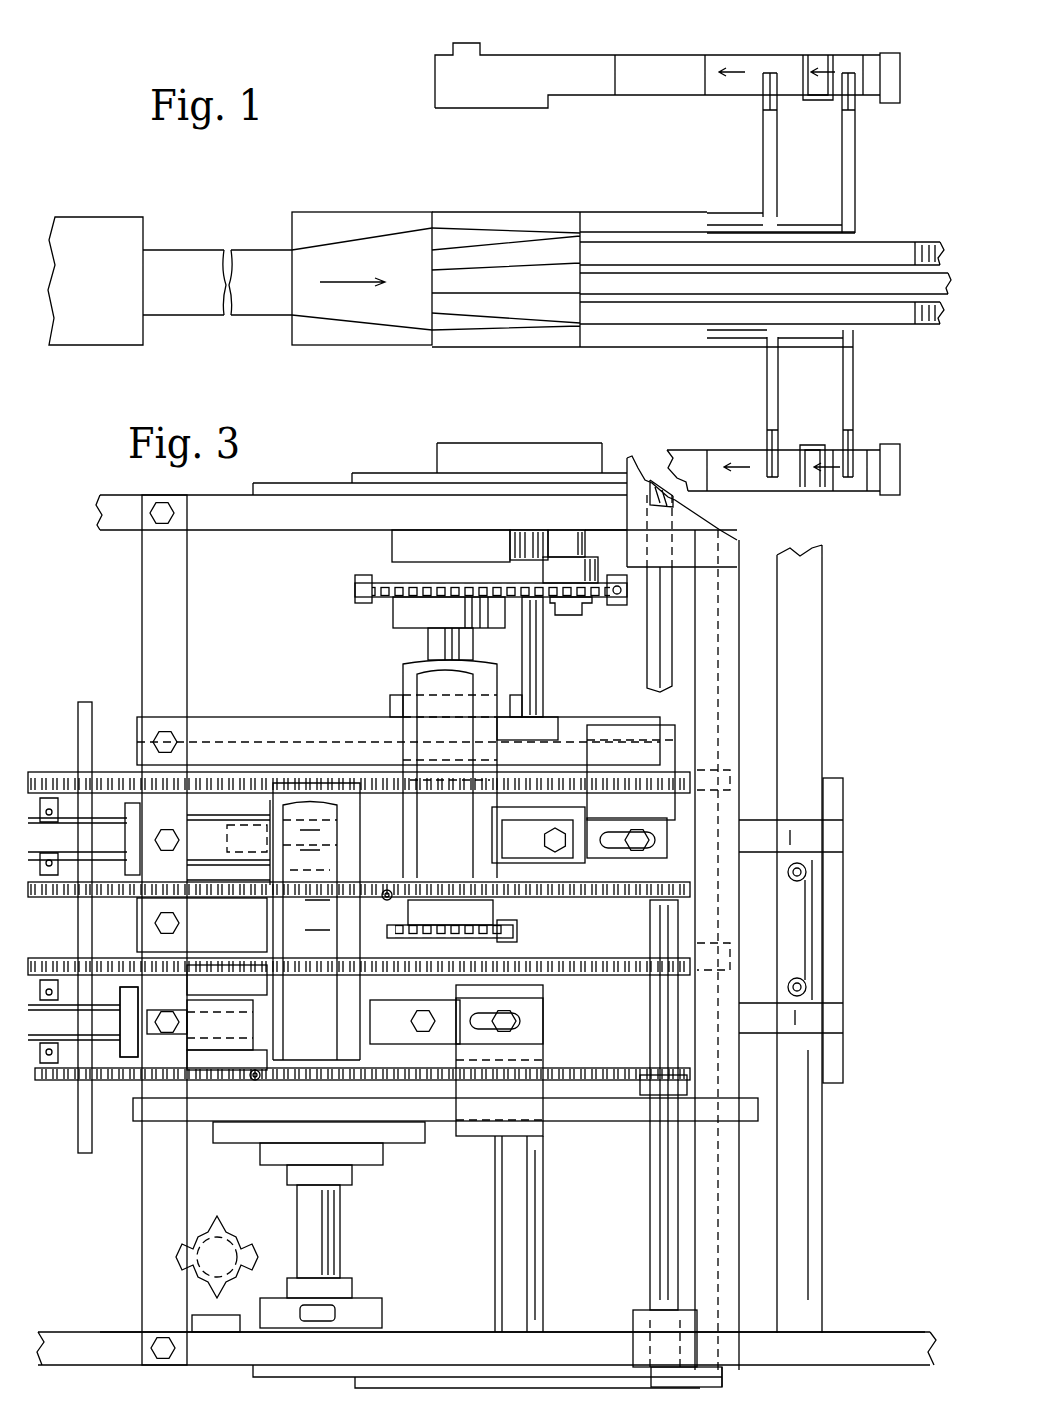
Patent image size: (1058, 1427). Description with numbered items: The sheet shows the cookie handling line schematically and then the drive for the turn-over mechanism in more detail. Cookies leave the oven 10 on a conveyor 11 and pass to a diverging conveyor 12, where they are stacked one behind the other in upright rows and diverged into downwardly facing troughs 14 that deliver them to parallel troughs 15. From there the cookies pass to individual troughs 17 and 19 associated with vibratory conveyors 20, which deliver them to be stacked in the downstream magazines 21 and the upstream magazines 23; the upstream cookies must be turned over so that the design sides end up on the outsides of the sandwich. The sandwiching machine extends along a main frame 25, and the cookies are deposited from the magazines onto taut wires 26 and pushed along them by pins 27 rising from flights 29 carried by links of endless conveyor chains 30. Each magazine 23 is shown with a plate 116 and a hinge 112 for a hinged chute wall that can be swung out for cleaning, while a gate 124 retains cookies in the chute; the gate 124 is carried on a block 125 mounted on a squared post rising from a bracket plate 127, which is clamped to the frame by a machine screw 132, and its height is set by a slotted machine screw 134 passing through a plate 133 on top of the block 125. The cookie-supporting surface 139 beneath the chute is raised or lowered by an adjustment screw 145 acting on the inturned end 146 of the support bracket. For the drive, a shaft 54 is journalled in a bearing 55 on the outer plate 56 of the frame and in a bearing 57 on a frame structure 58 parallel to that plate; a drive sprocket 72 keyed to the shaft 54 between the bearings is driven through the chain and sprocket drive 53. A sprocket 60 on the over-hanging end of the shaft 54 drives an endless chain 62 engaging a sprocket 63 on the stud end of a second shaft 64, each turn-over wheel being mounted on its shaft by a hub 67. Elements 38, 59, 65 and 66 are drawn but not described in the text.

In FIG. 1, the oven 10 is at (112, 217).
In FIG. 1, the conveyor 11 is at (230, 256).
In FIG. 1, the diverging conveyor 12 is at (345, 230).
In FIG. 1, the downwardly facing troughs 14 is at (500, 235).
In FIG. 1, the parallel troughs 15 is at (603, 245).
In FIG. 1, the individual troughs 17 is at (715, 213).
In FIG. 1, the individual troughs 19 is at (838, 230).
In FIG. 1, the vibratory conveyors 20 is at (757, 194).
In FIG. 1, the downstream magazines 21 is at (763, 110).
In FIG. 1, the upstream magazines 23 is at (856, 108).
In FIG. 3, the upstream magazines 23 is at (400, 672).
In FIG. 1, the main frame 25 is at (660, 104).
In FIG. 3, the main frame 25 is at (137, 733).
In FIG. 3, the taut wires 26 is at (125, 830).
In FIG. 3, the pins 27 is at (155, 840).
In FIG. 3, the flights 29 is at (48, 798).
In FIG. 3, the endless conveyor chains 30 is at (50, 772).
In FIG. 1, the filler nozzle 38 is at (805, 70).
In FIG. 3, the chain and sprocket drive 53 is at (619, 605).
In FIG. 3, the shaft 54 is at (428, 646).
In FIG. 3, the bearing 55 is at (505, 545).
In FIG. 3, the outer plate 56 is at (368, 530).
In FIG. 3, the bearing 57 is at (520, 705).
In FIG. 3, the frame structure 58 is at (560, 728).
In FIG. 3, the drive shaft 59 is at (527, 657).
In FIG. 3, the sprocket 60 is at (485, 933).
In FIG. 3, the endless chain 62 is at (520, 930).
In FIG. 3, the sprocket 63 is at (390, 922).
In FIG. 3, the shaft 64 is at (225, 975).
In FIG. 3, the support plate 65 is at (375, 1150).
In FIG. 3, the base block 66 is at (365, 1300).
In FIG. 3, the hub 67 is at (435, 1332).
In FIG. 3, the drive sprocket 72 is at (383, 598).
In FIG. 3, the hinge 112 is at (392, 893).
In FIG. 3, the plate 116 is at (388, 782).
In FIG. 3, the gate 124 is at (512, 805).
In FIG. 3, the block 125 is at (627, 865).
In FIG. 3, the bracket plate 127 is at (655, 725).
In FIG. 3, the machine screw 132 is at (545, 1021).
In FIG. 3, the plate 133 is at (420, 1095).
In FIG. 3, the slotted machine screw 134 is at (580, 835).
In FIG. 3, the cookie-supporting surface 139 is at (245, 1018).
In FIG. 3, the adjustment screw 145 is at (175, 1000).
In FIG. 3, the inturned end 146 is at (135, 1058).